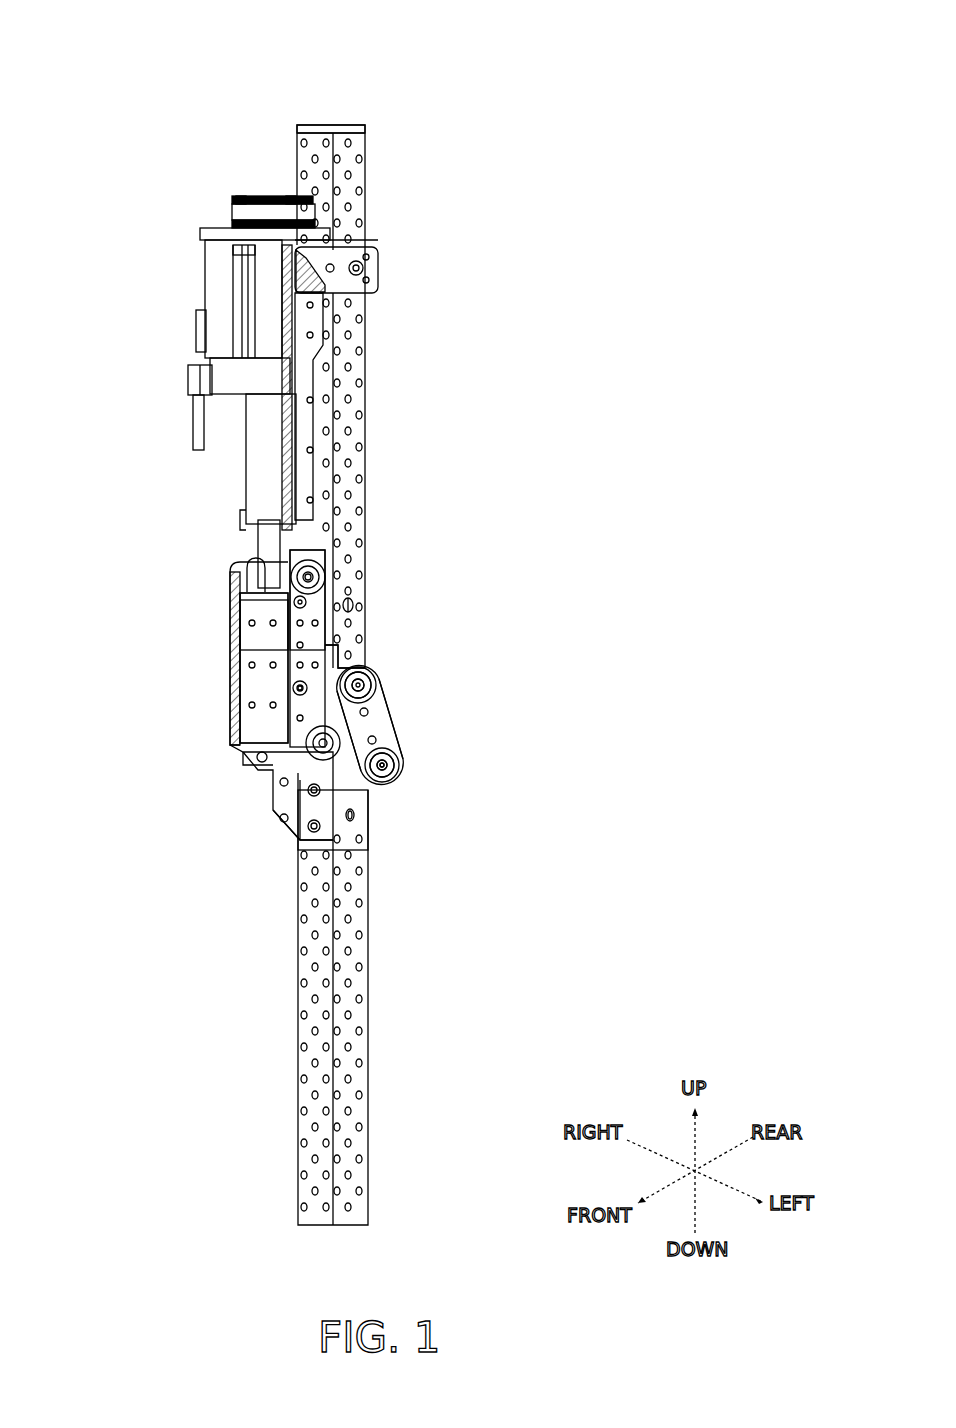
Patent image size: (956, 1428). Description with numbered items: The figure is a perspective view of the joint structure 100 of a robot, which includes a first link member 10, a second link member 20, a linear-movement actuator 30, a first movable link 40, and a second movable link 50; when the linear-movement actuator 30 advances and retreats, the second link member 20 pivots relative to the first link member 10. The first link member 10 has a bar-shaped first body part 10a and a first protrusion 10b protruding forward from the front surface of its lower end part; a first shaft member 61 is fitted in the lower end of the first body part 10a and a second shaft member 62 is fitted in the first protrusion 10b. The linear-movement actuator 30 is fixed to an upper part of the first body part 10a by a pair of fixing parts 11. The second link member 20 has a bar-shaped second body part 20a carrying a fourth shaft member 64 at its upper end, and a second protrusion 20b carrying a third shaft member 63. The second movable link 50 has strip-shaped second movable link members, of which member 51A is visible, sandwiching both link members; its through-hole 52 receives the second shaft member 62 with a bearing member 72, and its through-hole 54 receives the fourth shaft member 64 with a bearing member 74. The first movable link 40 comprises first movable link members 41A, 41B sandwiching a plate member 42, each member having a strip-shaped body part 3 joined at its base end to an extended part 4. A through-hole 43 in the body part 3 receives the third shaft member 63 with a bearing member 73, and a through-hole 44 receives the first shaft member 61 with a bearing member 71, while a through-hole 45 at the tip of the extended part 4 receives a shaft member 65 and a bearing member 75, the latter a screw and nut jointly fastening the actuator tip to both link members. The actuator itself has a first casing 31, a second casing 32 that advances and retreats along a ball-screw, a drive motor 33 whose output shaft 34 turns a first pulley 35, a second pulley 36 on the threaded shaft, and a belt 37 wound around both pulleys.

The joint structure 100 is at (382, 26).
The first link member 10 is at (375, 491).
The first body part 10a is at (367, 206).
The first protrusion 10b is at (366, 650).
The fixing parts 11 is at (385, 265).
The second link member 20 is at (372, 1017).
The second body part 20a is at (370, 893).
The second protrusion 20b is at (280, 822).
The linear-movement actuator 30 is at (203, 284).
The first casing 31 is at (262, 468).
The second casing 32 is at (258, 540).
The drive motor 33 is at (200, 326).
The output shaft 34 is at (232, 225).
The first pulley 35 is at (240, 196).
The second pulley 36 is at (292, 196).
The belt 37 is at (232, 200).
The first movable link 40 is at (228, 612).
The first movable link member 41A is at (325, 612).
The first movable link member 41B is at (240, 575).
The plate member 42 is at (270, 640).
The through-hole 43 is at (258, 770).
The through-hole 44 is at (378, 688).
The through-hole 45 is at (322, 598).
The second movable link 50 is at (395, 718).
The second movable link member 51A is at (390, 746).
The through-hole 52 is at (290, 698).
The through-hole 54 is at (398, 763).
The first shaft member 61 is at (370, 681).
The second shaft member 62 is at (300, 668).
The third shaft member 63 is at (308, 736).
The fourth shaft member 64 is at (400, 770).
The shaft member 65 is at (325, 578).
The bearing member 71 is at (348, 668).
The bearing member 72 is at (296, 688).
The bearing member 73 is at (262, 757).
The bearing member 74 is at (392, 780).
The bearing member 75 is at (320, 565).
The body part 3 is at (386, 770).
The extended part 4 is at (348, 646).